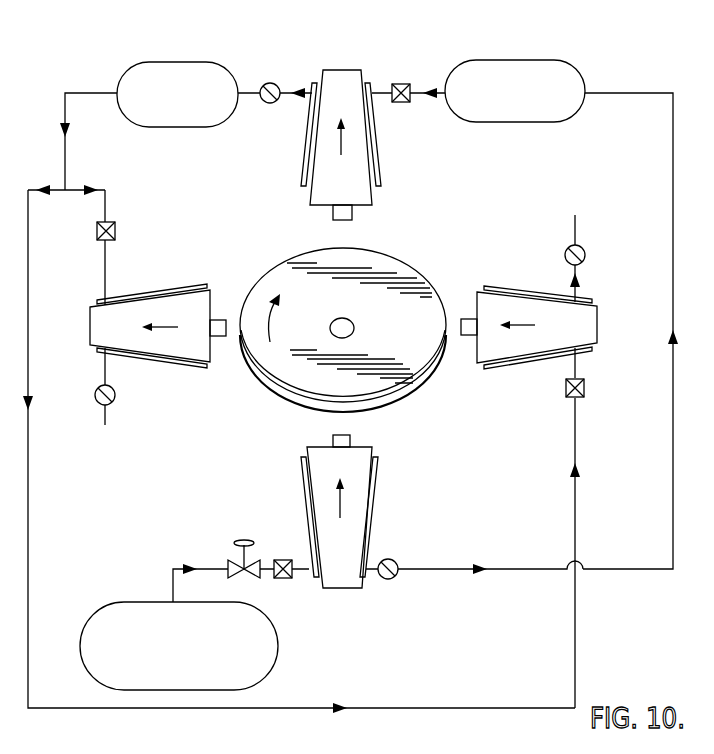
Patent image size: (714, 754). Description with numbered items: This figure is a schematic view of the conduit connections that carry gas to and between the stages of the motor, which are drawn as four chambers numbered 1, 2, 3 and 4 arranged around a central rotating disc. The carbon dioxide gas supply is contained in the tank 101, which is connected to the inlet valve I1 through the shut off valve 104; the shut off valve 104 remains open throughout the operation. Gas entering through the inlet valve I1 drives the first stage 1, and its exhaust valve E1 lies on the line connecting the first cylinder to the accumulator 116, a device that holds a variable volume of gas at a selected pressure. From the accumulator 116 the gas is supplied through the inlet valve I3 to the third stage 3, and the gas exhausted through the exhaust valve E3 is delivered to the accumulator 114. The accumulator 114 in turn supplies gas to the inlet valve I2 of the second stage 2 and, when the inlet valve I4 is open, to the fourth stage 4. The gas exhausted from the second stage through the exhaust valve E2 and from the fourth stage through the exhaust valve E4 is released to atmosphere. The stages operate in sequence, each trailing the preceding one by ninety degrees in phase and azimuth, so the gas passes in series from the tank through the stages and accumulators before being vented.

The first turbine 1 is at (339, 511).
The second compressor 2 is at (158, 326).
The third turbine 3 is at (341, 145).
The fourth compressor 4 is at (529, 327).
The tank 101 is at (100, 602).
The shut off valve 104 is at (230, 563).
The accumulator 114 is at (158, 62).
The accumulator 116 is at (560, 60).
The exhaust valve E1 is at (385, 559).
The exhaust valve E2 is at (142, 382).
The exhaust valve E3 is at (272, 83).
The exhaust valve E4 is at (586, 252).
The inlet valve I1 is at (283, 578).
The inlet valve I2 is at (144, 214).
The inlet valve I3 is at (400, 84).
The inlet valve I4 is at (584, 382).